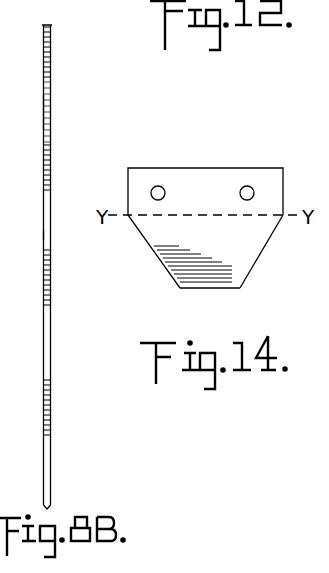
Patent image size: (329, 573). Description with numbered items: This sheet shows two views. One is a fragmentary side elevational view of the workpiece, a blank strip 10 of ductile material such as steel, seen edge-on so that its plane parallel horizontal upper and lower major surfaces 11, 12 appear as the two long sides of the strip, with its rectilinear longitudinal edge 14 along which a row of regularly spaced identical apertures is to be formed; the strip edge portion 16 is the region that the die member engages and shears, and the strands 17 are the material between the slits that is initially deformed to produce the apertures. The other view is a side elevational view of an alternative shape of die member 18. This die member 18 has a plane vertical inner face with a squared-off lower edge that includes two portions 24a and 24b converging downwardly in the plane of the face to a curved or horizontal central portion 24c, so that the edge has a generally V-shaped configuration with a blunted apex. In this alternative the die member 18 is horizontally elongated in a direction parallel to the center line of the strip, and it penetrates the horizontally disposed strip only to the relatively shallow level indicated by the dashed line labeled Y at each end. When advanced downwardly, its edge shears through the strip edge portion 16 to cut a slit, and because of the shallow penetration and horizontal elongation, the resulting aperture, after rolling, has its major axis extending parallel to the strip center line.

In FIG. 8B, the blank strip 10 is at (57, 79).
In FIG. 8B, the upper major surface 11 is at (43, 116).
In FIG. 8B, the lower major surface 12 is at (51, 233).
In FIG. 8B, the longitudinal edge 14 is at (7, 76).
In FIG. 8B, the strip edge portion 16 is at (5, 439).
In FIG. 8B, the strands 17 is at (2, 142).
In FIG. 14, the die member 18 is at (240, 152).
In FIG. 14, the converging edge portion 24a is at (154, 252).
In FIG. 14, the converging edge portion 24b is at (265, 260).
In FIG. 14, the central edge portion 24c is at (196, 290).